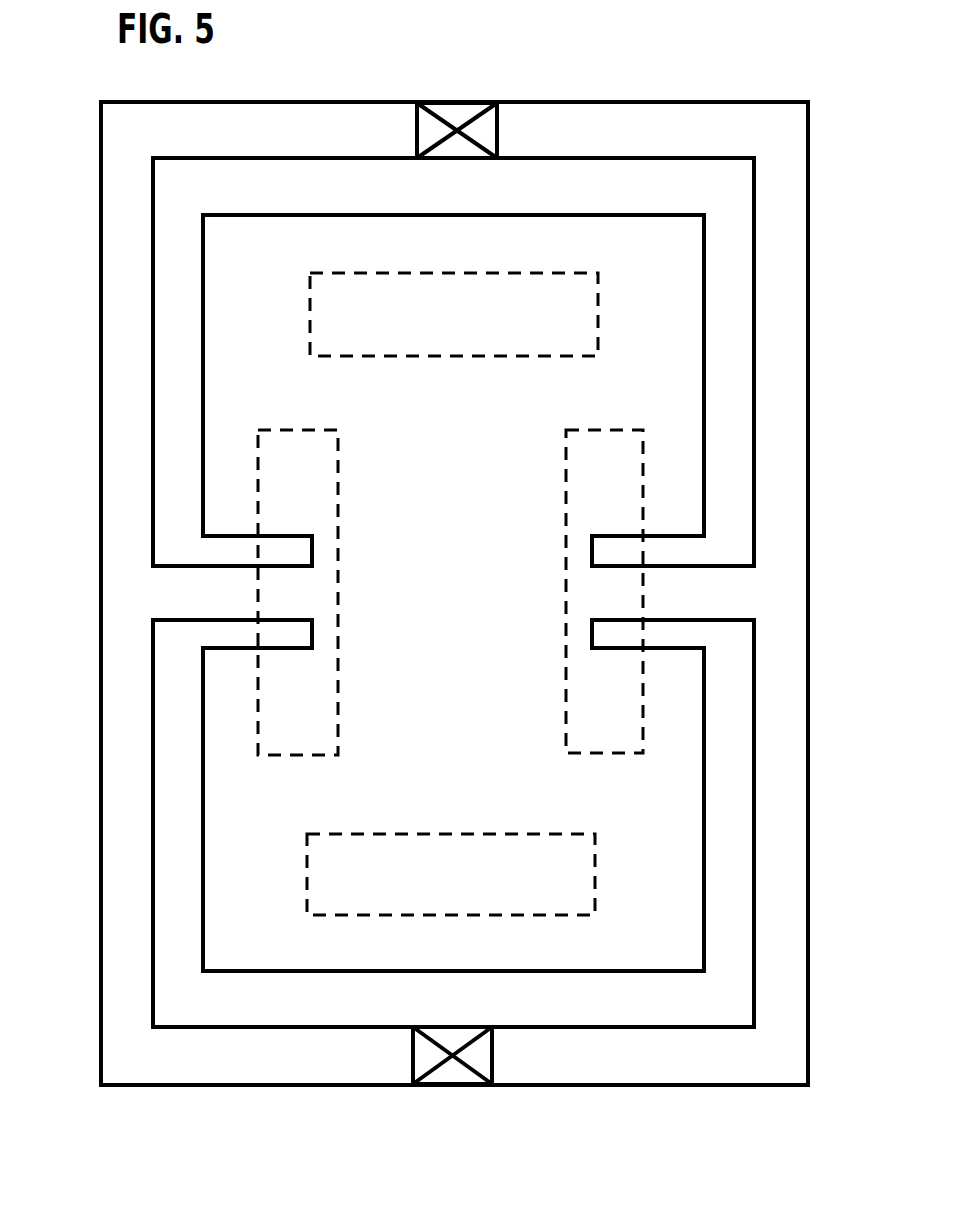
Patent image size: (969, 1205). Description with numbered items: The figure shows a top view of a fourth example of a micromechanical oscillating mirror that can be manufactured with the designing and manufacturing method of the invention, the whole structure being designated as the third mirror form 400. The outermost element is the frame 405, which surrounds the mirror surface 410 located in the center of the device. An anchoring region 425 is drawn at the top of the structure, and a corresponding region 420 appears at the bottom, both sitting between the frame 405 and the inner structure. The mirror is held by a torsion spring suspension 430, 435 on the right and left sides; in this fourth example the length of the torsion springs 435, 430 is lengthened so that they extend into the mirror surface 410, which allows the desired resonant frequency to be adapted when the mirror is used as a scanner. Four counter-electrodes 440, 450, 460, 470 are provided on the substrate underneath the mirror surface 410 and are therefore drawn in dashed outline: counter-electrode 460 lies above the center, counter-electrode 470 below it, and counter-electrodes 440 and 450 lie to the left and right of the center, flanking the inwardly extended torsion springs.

The third mirror form 400 is at (680, 86).
The frame 405 is at (318, 101).
The mirror surface 410 is at (433, 612).
The lower feed/connection element 420 is at (455, 1084).
The anchoring region 425 is at (455, 103).
The torsion spring suspension 430 is at (737, 590).
The torsion spring suspension 435 is at (167, 593).
The counter-electrode 440 is at (333, 470).
The counter-electrode 450 is at (568, 698).
The counter-electrode 460 is at (455, 357).
The counter-electrode 470 is at (452, 840).